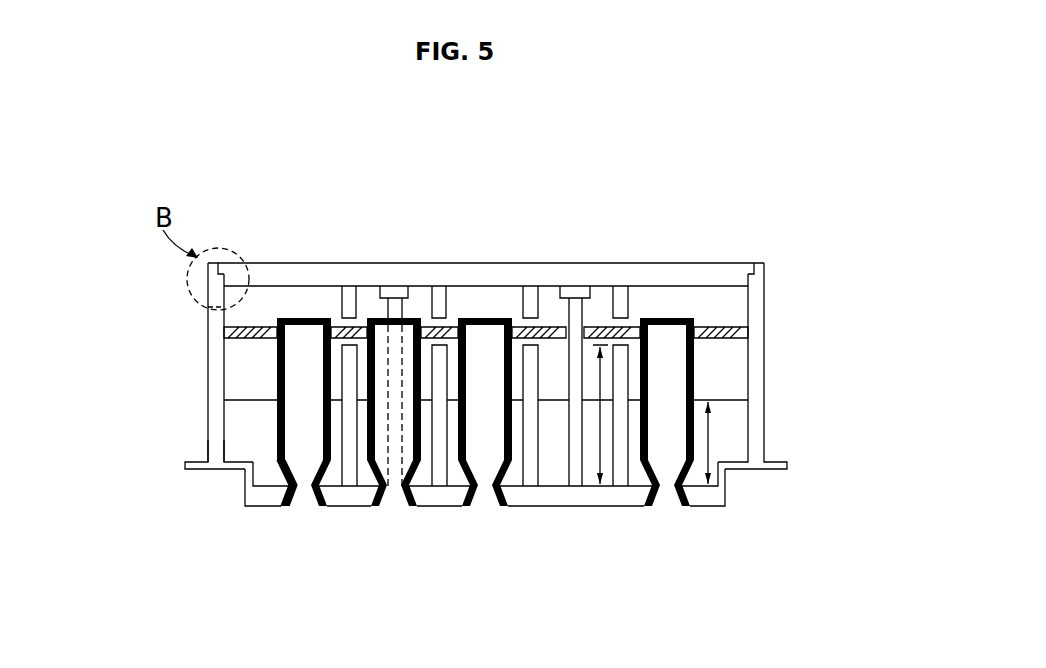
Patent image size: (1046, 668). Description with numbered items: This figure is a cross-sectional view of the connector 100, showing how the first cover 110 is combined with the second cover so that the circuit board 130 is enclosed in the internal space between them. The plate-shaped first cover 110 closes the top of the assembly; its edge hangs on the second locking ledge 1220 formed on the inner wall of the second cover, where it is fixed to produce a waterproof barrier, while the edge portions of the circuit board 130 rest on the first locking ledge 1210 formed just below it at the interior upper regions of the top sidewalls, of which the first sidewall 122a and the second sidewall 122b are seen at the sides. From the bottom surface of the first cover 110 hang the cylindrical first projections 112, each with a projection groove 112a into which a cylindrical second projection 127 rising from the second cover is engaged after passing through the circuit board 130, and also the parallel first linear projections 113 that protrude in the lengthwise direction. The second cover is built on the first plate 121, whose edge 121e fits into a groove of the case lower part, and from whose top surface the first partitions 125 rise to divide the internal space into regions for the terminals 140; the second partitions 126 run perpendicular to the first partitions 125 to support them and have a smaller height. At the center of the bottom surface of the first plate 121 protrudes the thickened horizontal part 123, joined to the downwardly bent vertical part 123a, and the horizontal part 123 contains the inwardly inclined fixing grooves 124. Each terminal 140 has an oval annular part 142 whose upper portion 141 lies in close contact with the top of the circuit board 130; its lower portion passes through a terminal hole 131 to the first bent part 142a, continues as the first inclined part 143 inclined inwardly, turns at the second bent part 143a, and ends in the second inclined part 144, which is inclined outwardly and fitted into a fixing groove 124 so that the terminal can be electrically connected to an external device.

The connector 100 is at (778, 191).
The first cover 110 is at (663, 280).
The first projections 112 is at (412, 294).
The projection grooves 112a is at (386, 297).
The first linear projections 113 is at (342, 296).
The first plate 121 is at (773, 475).
The edge of first plate 121e is at (185, 462).
The first sidewall 122a is at (757, 377).
The second sidewall 122b is at (218, 285).
The horizontal part 123 is at (708, 507).
The vertical part 123a is at (722, 487).
The fixing grooves 124 is at (671, 507).
The first partitions 125 is at (696, 394).
The second partitions 126 is at (727, 435).
The second projections 127 is at (583, 305).
The circuit board 130 is at (718, 324).
The terminal holes 131 is at (519, 323).
The terminals 140 is at (122, 340).
The upper portion of annular part 141 is at (293, 314).
The annular part 142 is at (277, 378).
The first bent part 142a is at (277, 460).
The first inclined part 143 is at (208, 458).
The second bent part 143a is at (256, 484).
The second inclined part 144 is at (282, 506).
The first locking ledge 1210 is at (748, 335).
The second locking ledge 1220 is at (754, 264).